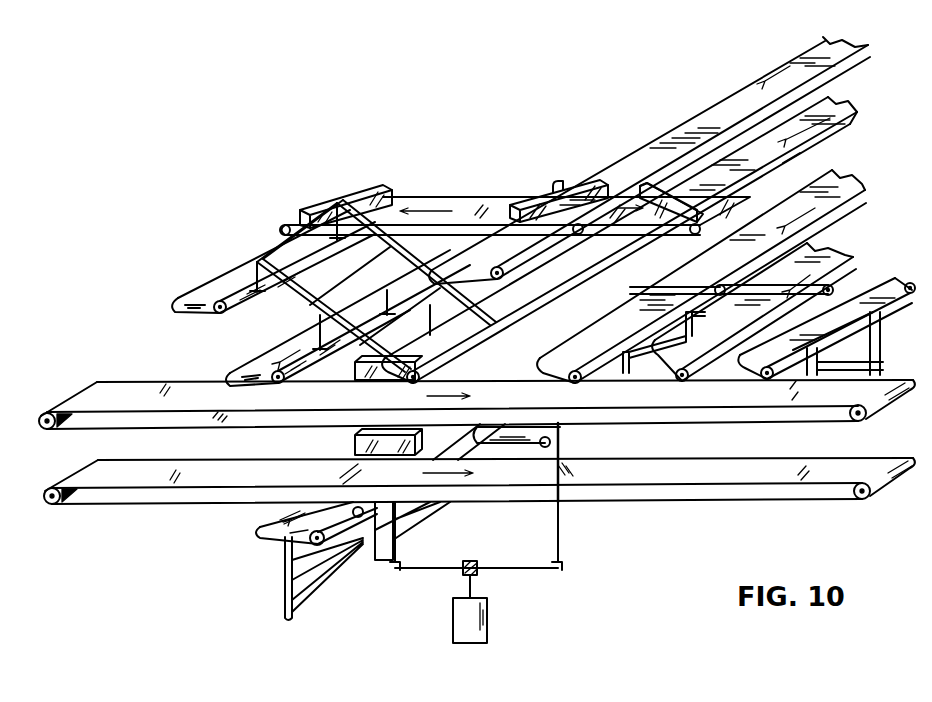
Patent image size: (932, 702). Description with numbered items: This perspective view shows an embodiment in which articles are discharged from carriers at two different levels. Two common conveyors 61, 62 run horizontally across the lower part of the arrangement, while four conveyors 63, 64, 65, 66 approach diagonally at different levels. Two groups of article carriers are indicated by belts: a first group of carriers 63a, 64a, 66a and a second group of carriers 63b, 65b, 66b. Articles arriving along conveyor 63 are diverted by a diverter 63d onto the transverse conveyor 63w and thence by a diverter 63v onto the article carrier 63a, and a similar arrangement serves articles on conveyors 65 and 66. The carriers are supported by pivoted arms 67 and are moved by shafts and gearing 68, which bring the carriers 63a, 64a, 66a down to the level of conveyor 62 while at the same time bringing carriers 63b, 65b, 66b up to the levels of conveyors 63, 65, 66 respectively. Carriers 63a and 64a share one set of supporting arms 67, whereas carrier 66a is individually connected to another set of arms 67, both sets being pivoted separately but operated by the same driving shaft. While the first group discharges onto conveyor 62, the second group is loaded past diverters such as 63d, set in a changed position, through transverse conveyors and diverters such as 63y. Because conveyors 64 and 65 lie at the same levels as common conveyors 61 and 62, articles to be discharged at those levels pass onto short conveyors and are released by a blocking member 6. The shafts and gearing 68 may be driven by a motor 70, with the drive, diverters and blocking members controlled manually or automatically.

The blocking member 6 is at (355, 369).
The common conveyor 61 is at (95, 393).
The common conveyor 62 is at (97, 472).
The conveyor 63 is at (725, 103).
The article carrier 63a is at (183, 300).
The article carrier 63b is at (684, 296).
The diverter 63d is at (555, 195).
The diverter 63v is at (383, 185).
The transverse conveyor 63w is at (475, 197).
The diverter 63y is at (725, 205).
The conveyor 64 is at (857, 112).
The article carrier 64a is at (240, 372).
The conveyor 65 is at (860, 190).
The article carrier 65b is at (765, 300).
The conveyor 66 is at (845, 255).
The article carrier 66a is at (258, 531).
The article carrier 66b is at (865, 291).
The supporting arm 67 is at (375, 248).
The shafts and gearing 68 is at (462, 572).
The motor 70 is at (488, 619).